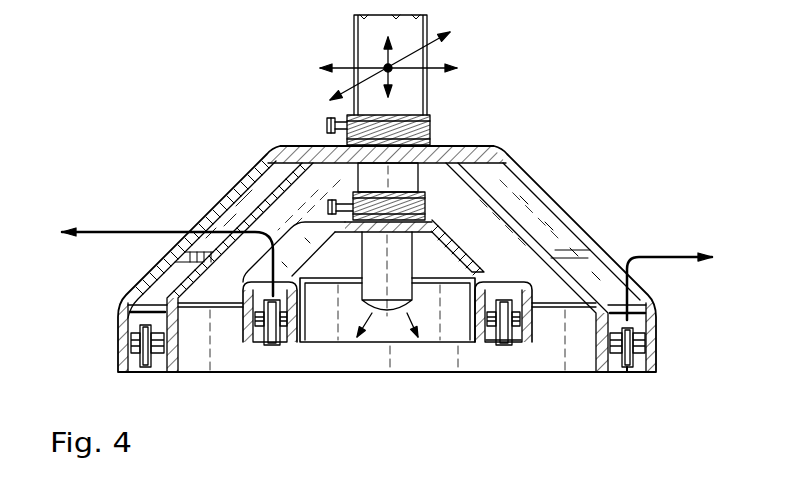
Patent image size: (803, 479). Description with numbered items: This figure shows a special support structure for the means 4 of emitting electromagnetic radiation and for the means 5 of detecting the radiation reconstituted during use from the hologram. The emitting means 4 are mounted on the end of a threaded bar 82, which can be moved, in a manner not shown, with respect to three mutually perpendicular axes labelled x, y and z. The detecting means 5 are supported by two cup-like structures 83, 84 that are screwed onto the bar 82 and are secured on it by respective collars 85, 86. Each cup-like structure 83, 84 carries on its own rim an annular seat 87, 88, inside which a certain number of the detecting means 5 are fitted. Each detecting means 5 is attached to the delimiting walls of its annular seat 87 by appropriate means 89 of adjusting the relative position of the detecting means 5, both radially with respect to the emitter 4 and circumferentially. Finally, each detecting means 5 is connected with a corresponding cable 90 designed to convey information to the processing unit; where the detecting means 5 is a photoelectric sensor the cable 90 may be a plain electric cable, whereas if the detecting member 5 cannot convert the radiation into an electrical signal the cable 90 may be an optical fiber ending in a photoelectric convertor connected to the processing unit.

The threaded bar 82 is at (360, 45).
The cup-like structure 84 is at (325, 147).
The collar 86 is at (425, 128).
The collar 85 is at (428, 205).
The cup-like structure 83 is at (347, 252).
The means of emitting electromagnetic radiation 4 is at (377, 320).
The means of detecting radiation 5 is at (152, 370).
The means of adjusting the relative position 89 is at (143, 368).
The annular seat 87 is at (490, 345).
The annular seat 88 is at (638, 370).
The cable 90 is at (137, 230).